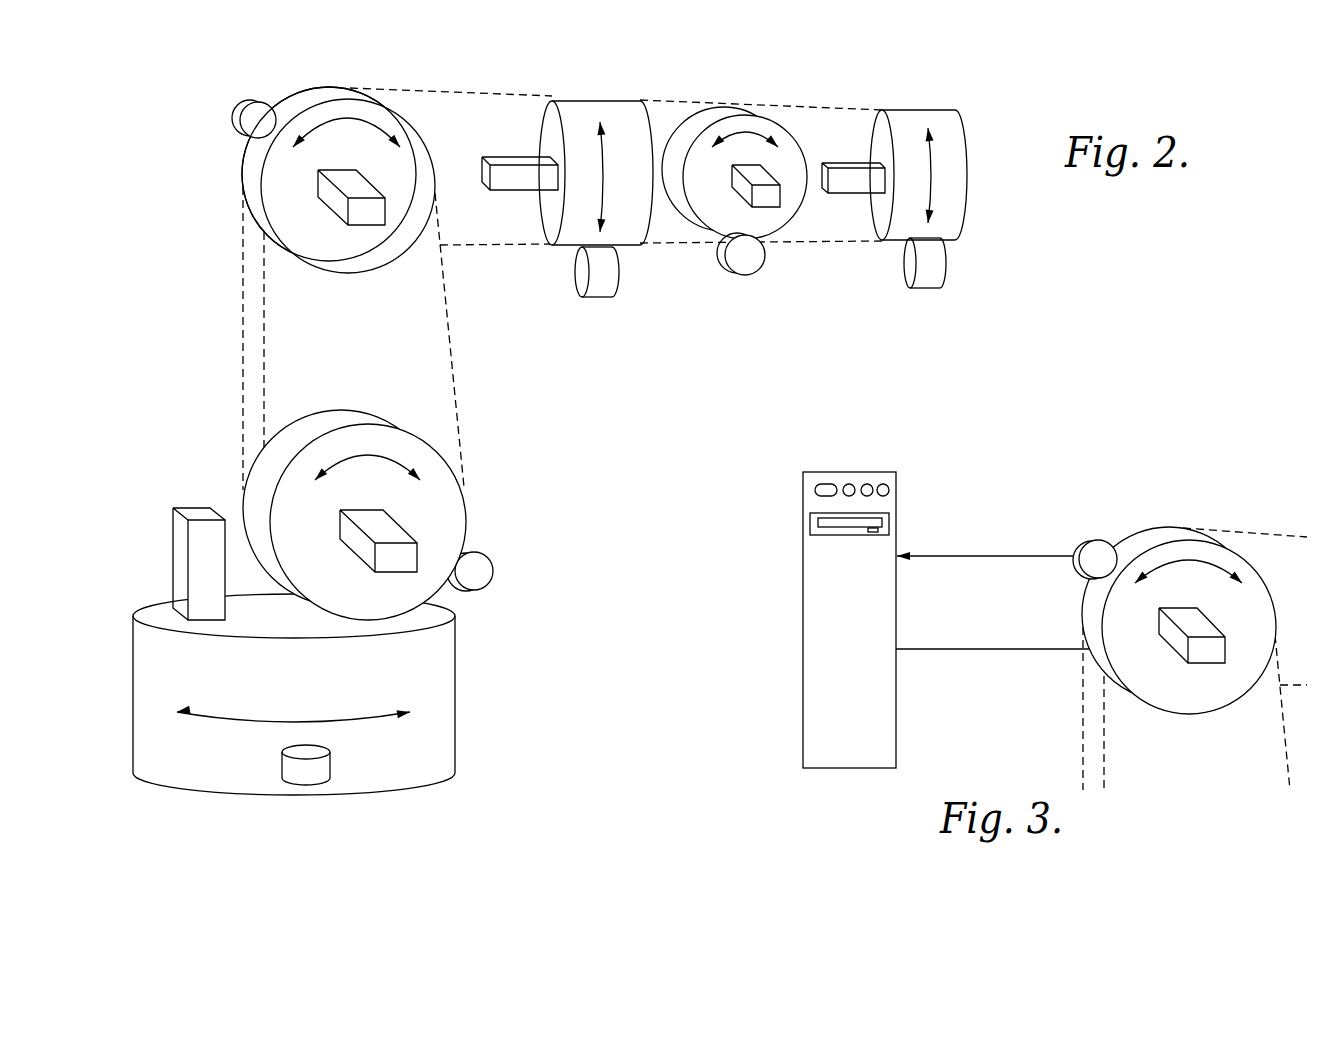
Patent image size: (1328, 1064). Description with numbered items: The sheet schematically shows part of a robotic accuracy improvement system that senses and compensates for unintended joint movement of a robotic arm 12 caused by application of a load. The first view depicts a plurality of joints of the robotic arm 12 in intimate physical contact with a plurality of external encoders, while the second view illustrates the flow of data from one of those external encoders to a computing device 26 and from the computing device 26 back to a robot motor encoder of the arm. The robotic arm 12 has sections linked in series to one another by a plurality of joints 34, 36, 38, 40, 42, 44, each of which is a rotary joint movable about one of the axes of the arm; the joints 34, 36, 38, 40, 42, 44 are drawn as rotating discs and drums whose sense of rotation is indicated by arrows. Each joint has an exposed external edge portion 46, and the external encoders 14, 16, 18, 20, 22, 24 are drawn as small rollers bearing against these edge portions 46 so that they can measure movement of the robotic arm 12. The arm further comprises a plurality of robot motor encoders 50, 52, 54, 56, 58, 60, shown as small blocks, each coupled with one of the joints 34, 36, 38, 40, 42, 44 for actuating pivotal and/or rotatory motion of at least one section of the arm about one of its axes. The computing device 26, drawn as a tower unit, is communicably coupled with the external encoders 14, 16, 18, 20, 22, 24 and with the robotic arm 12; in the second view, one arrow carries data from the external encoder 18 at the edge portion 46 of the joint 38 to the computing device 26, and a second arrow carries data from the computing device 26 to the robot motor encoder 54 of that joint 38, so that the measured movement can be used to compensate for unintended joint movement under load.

In FIG. 2, the robotic arm 12 is at (178, 117).
In FIG. 2, the external encoder 14 is at (313, 777).
In FIG. 2, the external encoder 16 is at (470, 578).
In FIG. 2, the external encoder 18 is at (256, 118).
In FIG. 3, the external encoder 18 is at (1090, 543).
In FIG. 2, the external encoder 20 is at (602, 287).
In FIG. 2, the external encoder 22 is at (747, 260).
In FIG. 2, the external encoder 24 is at (933, 272).
In FIG. 3, the computing device 26 is at (867, 472).
In FIG. 2, the joint 34 is at (447, 733).
In FIG. 2, the joint 36 is at (448, 490).
In FIG. 2, the joint 38 is at (272, 193).
In FIG. 3, the joint 38 is at (1160, 532).
In FIG. 2, the joint 40 is at (553, 123).
In FIG. 2, the joint 42 is at (718, 113).
In FIG. 2, the joint 44 is at (953, 128).
In FIG. 2, the exposed external edge portion 46 is at (307, 100).
In FIG. 2, the robot motor encoder 50 is at (198, 513).
In FIG. 2, the robot motor encoder 52 is at (387, 565).
In FIG. 2, the robot motor encoder 54 is at (362, 213).
In FIG. 3, the robot motor encoder 54 is at (1207, 658).
In FIG. 2, the robot motor encoder 56 is at (520, 183).
In FIG. 2, the robot motor encoder 58 is at (773, 193).
In FIG. 2, the robot motor encoder 60 is at (852, 163).